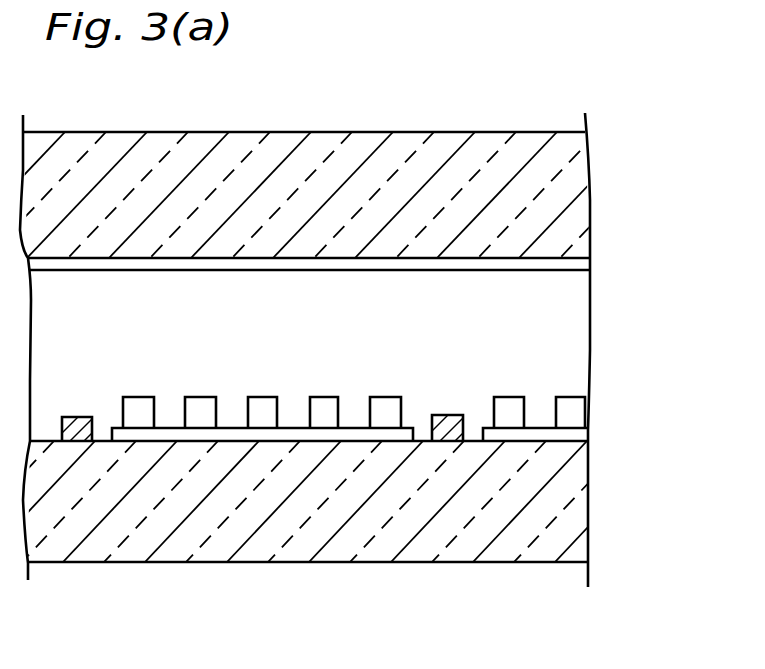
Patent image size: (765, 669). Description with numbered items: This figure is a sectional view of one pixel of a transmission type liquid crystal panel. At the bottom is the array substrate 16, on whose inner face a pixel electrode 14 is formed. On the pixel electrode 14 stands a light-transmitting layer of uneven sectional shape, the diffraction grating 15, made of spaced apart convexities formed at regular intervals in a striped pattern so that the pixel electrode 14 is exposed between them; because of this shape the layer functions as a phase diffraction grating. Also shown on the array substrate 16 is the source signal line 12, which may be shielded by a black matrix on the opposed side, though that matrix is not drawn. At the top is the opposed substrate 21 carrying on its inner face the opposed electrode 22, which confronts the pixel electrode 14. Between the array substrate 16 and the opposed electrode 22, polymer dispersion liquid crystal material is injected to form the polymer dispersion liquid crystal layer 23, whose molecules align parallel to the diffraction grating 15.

The source signal line 12 is at (443, 437).
The pixel electrode 14 is at (188, 435).
The diffraction grating 15 is at (263, 420).
The array substrate 16 is at (580, 504).
The opposed substrate 21 is at (570, 202).
The opposed electrode 22 is at (582, 265).
The polymer dispersion liquid crystal layer 23 is at (570, 334).